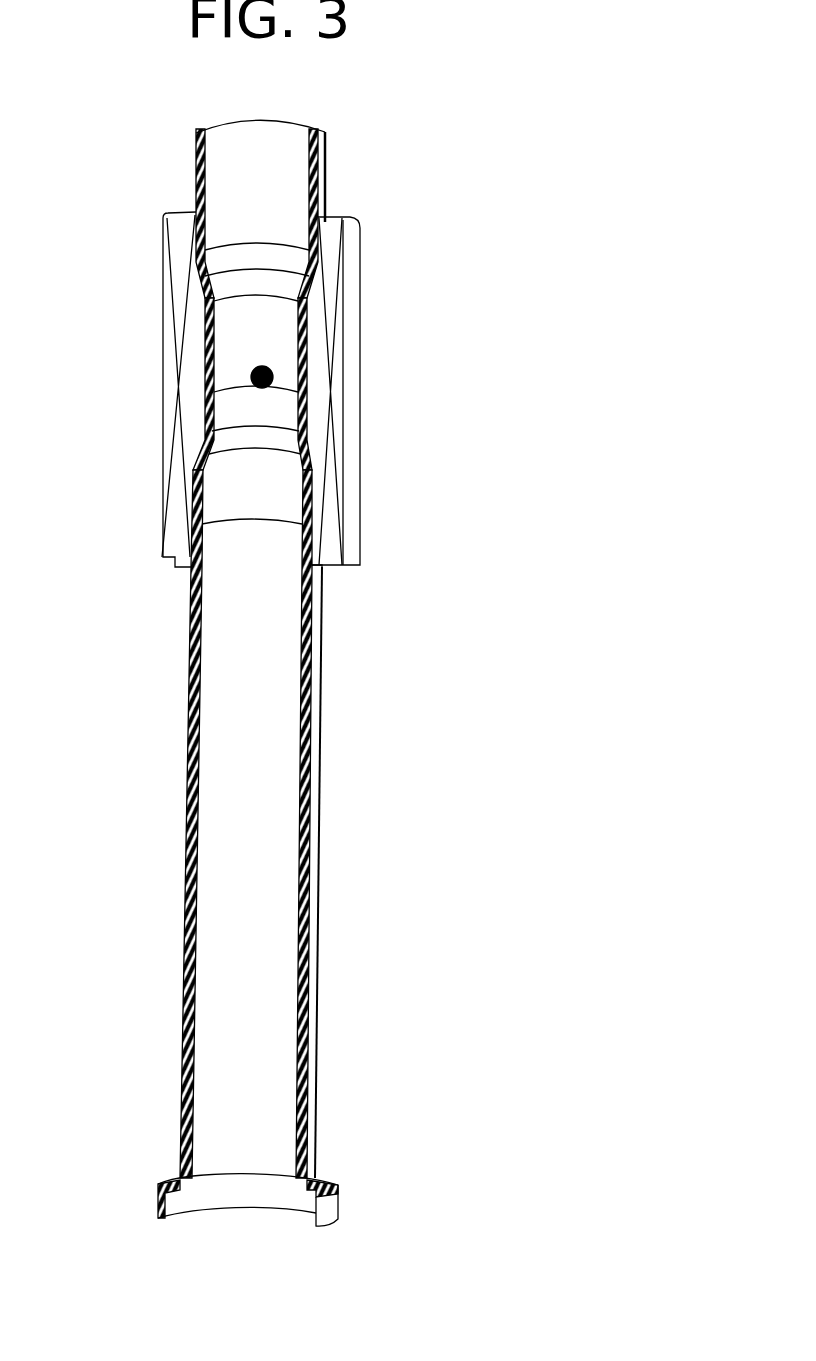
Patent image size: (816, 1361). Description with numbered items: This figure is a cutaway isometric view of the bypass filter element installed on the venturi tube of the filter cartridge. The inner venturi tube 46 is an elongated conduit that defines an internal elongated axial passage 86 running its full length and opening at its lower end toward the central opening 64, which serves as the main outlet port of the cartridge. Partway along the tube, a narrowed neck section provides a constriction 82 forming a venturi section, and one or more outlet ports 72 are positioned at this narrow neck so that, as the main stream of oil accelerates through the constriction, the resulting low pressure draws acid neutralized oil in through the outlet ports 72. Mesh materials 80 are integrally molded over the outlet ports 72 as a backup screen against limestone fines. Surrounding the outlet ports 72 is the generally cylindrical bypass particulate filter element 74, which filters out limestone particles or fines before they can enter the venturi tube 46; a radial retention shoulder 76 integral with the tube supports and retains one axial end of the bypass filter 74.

The inner venturi tube 46 is at (197, 194).
The outlet ports 72 is at (257, 306).
The mesh materials 80 is at (269, 365).
The constriction 82 is at (334, 418).
The bypass particulate filter element 74 is at (327, 540).
The radial retention shoulder 76 is at (320, 597).
The internal elongated axial passage 86 is at (280, 888).
The central opening 64 is at (263, 1197).